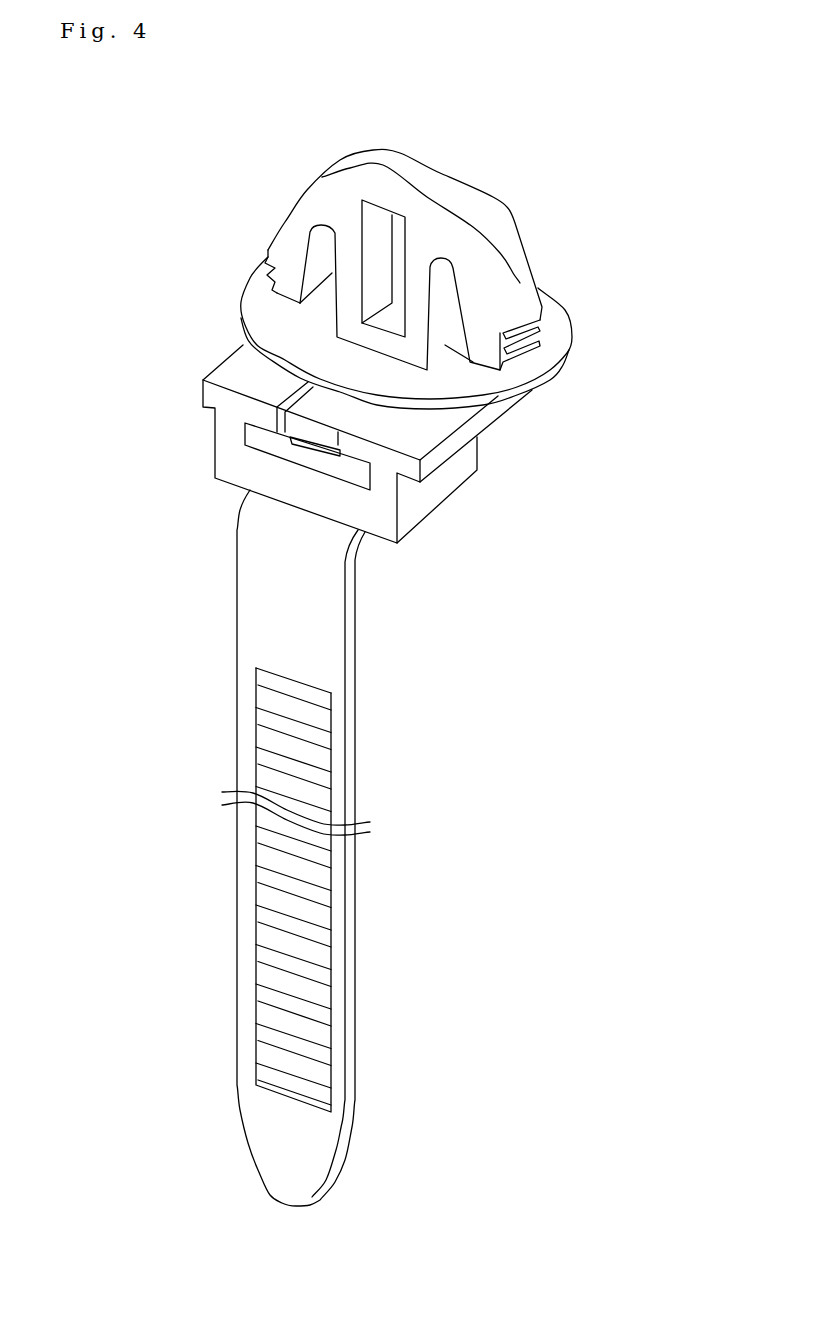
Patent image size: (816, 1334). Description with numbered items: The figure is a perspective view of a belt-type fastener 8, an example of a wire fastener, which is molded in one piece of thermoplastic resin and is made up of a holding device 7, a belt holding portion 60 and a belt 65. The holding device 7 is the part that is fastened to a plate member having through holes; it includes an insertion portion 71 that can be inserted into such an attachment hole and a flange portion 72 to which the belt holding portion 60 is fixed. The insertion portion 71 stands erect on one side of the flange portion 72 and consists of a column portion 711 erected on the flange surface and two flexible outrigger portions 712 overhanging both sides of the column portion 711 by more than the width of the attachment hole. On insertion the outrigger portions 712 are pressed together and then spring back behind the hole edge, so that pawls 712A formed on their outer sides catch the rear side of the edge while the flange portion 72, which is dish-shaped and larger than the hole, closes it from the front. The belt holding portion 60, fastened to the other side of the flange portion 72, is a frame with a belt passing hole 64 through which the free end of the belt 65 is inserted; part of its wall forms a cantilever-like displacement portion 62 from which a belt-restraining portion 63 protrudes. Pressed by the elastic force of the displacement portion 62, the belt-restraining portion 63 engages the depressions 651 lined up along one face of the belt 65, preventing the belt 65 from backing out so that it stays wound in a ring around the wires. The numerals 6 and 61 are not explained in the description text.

The belt-type fastener 8 is at (665, 96).
The belt clamp 6 is at (497, 718).
The holding device 7 is at (620, 185).
The insertion portion 71 is at (552, 185).
The column portion 711 is at (413, 275).
The outrigger portion 712 is at (313, 200).
The pawl 712A is at (262, 258).
The flange portion 72 is at (548, 372).
The belt holding portion 60 is at (492, 465).
The housing 61 is at (437, 492).
The displacement portion 62 is at (307, 410).
The belt-restraining portion 63 is at (317, 453).
The belt passing hole 64 is at (258, 436).
The belt 65 is at (370, 660).
The depression 651 is at (322, 878).